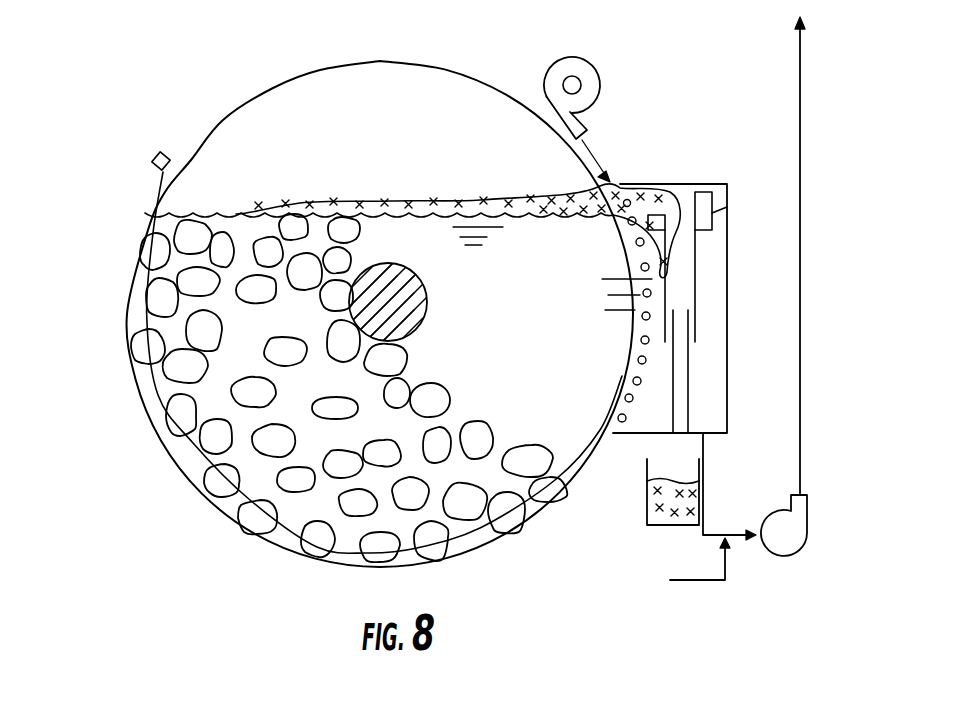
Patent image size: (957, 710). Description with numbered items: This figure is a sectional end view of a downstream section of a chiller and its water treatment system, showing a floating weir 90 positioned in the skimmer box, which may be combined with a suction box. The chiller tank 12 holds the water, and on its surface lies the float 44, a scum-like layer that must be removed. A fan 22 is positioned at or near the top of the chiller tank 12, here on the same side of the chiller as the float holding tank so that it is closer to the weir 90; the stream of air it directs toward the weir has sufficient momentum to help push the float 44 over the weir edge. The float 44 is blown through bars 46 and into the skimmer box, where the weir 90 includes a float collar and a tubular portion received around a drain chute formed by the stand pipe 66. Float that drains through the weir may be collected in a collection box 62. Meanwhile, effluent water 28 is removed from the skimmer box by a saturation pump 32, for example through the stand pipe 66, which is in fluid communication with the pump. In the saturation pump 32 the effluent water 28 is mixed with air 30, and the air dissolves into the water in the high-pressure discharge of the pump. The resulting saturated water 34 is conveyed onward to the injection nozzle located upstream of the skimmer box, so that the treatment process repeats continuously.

The chiller tank 12 is at (127, 315).
The fan 22 is at (620, 80).
The effluent water 28 is at (703, 467).
The air 30 is at (725, 583).
The saturation pump 32 is at (826, 519).
The saturated water 34 is at (800, 152).
The float 44 is at (533, 194).
The bars 46 is at (645, 242).
The collection box 62 is at (628, 519).
The stand pipe 66 is at (688, 363).
The floating weir 90 is at (712, 244).